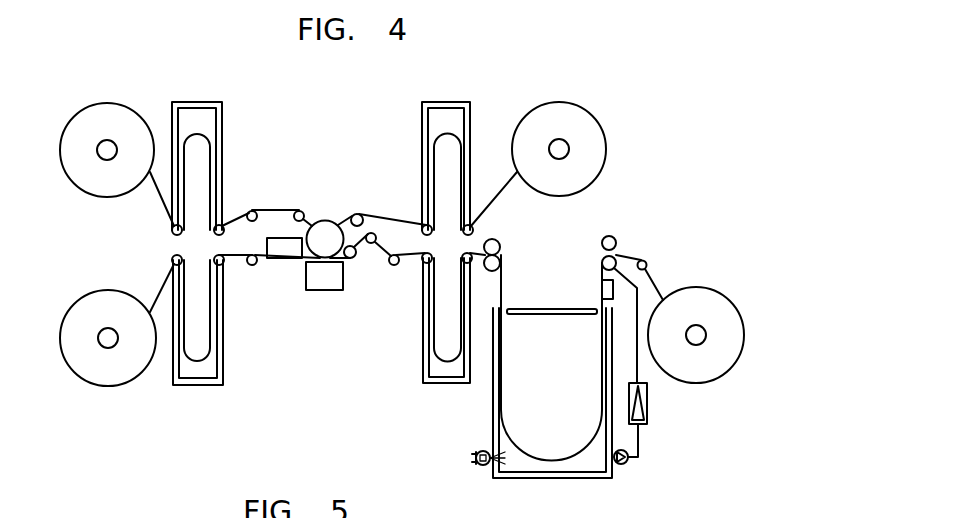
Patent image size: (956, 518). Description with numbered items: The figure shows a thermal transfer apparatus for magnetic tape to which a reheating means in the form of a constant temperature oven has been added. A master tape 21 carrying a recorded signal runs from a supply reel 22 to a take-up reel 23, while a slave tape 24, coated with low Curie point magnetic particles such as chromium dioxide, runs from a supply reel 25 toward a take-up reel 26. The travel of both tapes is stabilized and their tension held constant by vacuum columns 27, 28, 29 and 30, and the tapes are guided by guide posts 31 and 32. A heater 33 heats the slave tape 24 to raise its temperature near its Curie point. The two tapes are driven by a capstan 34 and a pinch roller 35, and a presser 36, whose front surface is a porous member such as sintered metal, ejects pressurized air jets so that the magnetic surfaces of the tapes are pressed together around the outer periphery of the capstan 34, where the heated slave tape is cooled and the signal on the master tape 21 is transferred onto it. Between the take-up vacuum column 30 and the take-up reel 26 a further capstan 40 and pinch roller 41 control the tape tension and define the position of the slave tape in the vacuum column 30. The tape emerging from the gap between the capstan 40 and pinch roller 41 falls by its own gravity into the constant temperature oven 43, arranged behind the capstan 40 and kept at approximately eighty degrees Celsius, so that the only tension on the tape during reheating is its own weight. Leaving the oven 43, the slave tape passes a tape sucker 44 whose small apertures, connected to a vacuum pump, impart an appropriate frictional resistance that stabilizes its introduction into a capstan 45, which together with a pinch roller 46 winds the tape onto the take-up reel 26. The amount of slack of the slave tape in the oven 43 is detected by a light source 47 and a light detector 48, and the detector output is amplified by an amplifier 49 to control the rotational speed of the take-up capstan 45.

The master tape 21 is at (168, 217).
The supply reel 22 is at (68, 176).
The take-up reel 23 is at (528, 114).
The slave tape 24 is at (166, 281).
The supply reel 25 is at (137, 374).
The take-up reel 26 is at (733, 366).
The vacuum column 27 is at (222, 118).
The vacuum column 28 is at (467, 103).
The vacuum column 29 is at (196, 386).
The take-up vacuum column 30 is at (446, 384).
The guide post 31 is at (251, 211).
The guide post 32 is at (396, 265).
The heater 33 is at (284, 259).
The capstan 34 is at (329, 228).
The pinch roller 35 is at (349, 259).
The presser 36 is at (330, 291).
The capstan 40 is at (500, 268).
The pinch roller 41 is at (501, 248).
The constant temperature oven 43 is at (554, 472).
The tape sucker 44 is at (602, 290).
The capstan 45 is at (602, 260).
The pinch roller 46 is at (617, 245).
The light source 47 is at (483, 466).
The light detector 48 is at (622, 465).
The amplifier 49 is at (648, 406).